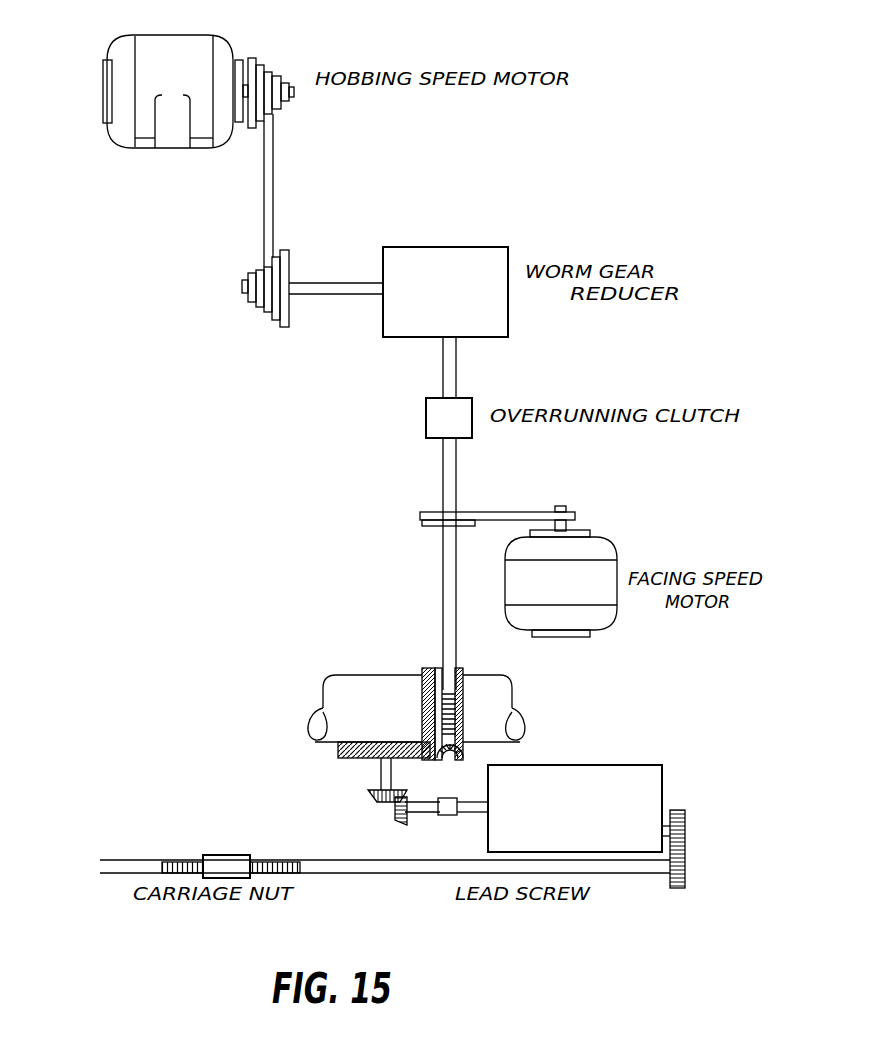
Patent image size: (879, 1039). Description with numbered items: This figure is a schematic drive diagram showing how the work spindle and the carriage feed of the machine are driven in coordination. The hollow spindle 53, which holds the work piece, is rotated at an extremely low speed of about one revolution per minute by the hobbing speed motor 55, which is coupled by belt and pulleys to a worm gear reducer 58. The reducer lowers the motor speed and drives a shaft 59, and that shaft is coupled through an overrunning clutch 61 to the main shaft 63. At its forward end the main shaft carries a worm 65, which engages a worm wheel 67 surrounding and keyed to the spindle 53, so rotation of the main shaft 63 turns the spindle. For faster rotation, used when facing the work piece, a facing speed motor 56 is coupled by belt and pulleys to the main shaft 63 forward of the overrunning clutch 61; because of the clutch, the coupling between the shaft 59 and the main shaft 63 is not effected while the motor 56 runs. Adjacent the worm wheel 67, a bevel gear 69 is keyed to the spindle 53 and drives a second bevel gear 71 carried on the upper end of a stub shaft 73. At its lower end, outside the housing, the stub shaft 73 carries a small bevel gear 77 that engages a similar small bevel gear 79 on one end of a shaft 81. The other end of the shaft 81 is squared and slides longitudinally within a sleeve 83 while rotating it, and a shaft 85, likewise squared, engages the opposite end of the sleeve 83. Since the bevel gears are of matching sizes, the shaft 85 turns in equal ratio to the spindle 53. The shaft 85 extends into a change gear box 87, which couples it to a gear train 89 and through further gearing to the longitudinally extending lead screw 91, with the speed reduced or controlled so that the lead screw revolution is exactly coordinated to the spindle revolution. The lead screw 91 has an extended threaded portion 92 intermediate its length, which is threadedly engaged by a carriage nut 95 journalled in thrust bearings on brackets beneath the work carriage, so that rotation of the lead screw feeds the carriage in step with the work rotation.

The motor 55 is at (128, 50).
The worm gear reducer 58 is at (407, 252).
The shaft 59 is at (448, 360).
The overrunning clutch 61 is at (440, 417).
The main shaft 63 is at (446, 577).
The motor 56 is at (597, 548).
The hollow spindle 53 is at (340, 682).
The bevel gear 69 is at (433, 667).
The worm wheel 67 is at (463, 670).
The worm 65 is at (463, 700).
The second bevel gear 71 is at (345, 758).
The stub shaft 73 is at (392, 771).
The small bevel gear 77 is at (372, 792).
The small bevel gear 79 is at (408, 818).
The shaft 81 is at (431, 794).
The sleeve 83 is at (457, 794).
The shaft 85 is at (482, 794).
The change gear box 87 is at (645, 778).
The gear train 89 is at (686, 842).
The lead screw 91 is at (595, 868).
The threaded portion 92 is at (266, 858).
The carriage nut 95 is at (216, 862).